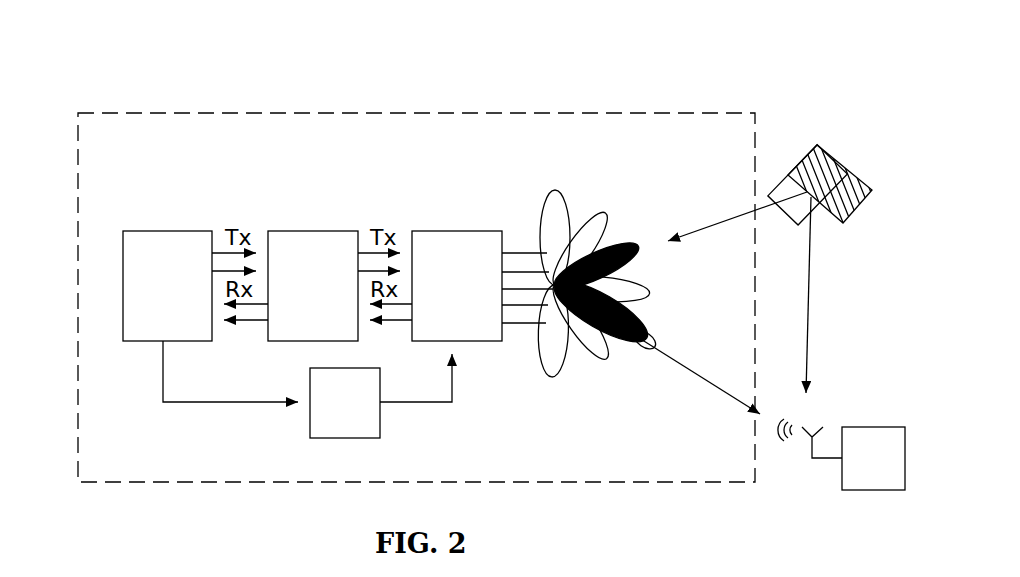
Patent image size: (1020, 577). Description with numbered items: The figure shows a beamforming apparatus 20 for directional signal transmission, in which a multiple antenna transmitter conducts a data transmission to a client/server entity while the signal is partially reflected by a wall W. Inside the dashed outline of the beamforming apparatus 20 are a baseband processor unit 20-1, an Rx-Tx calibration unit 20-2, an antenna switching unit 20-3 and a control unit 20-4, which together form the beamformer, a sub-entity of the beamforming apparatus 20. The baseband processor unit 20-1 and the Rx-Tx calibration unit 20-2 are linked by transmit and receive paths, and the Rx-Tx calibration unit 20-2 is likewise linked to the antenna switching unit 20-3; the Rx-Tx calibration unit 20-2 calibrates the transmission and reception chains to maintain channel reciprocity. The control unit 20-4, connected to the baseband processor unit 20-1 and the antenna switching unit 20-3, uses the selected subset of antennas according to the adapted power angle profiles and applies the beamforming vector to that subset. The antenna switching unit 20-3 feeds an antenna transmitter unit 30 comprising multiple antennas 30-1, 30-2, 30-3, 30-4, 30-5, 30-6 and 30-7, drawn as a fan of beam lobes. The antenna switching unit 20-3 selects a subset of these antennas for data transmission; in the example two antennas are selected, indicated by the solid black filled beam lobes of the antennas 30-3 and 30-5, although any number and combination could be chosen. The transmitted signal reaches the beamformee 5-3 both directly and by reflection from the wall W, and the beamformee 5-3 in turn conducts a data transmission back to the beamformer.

The beamforming apparatus 20 is at (127, 113).
The baseband processor unit 20-1 is at (158, 231).
The Rx-Tx calibration unit 20-2 is at (303, 231).
The antenna switching unit 20-3 is at (478, 231).
The control unit 20-4 is at (325, 420).
The antenna transmitter unit 30 is at (641, 290).
The antenna 30-1 is at (553, 198).
The antenna 30-2 is at (597, 227).
The antenna 30-3 is at (650, 240).
The antenna 30-4 is at (647, 295).
The antenna 30-5 is at (645, 348).
The antenna 30-6 is at (590, 350).
The antenna 30-7 is at (560, 375).
The wall W is at (847, 162).
The beamformee 5-3 is at (857, 428).